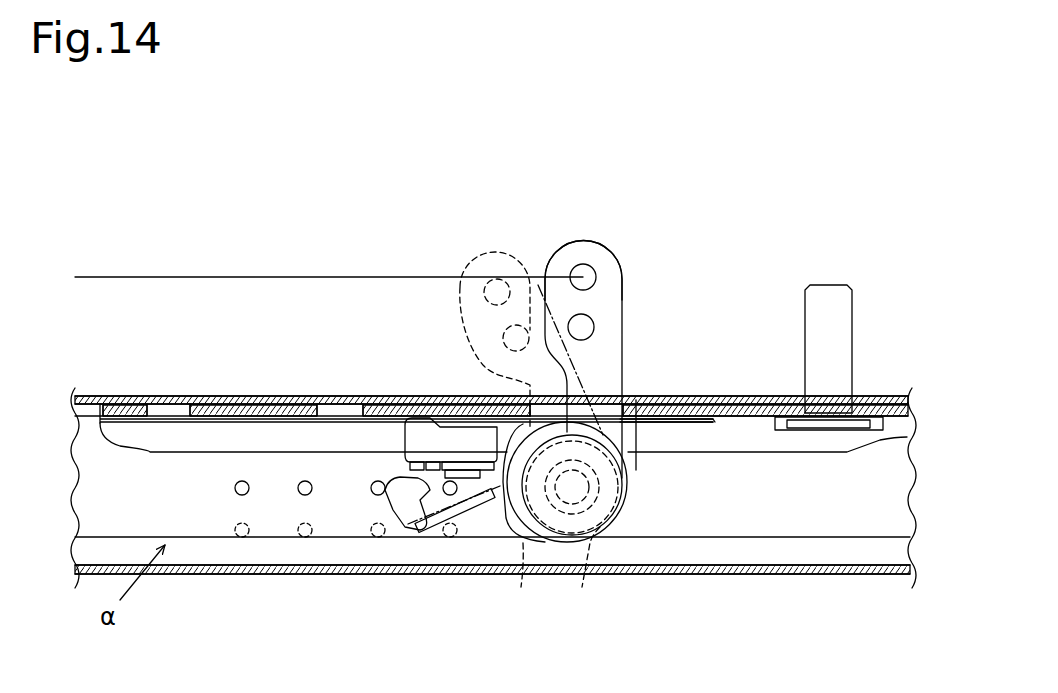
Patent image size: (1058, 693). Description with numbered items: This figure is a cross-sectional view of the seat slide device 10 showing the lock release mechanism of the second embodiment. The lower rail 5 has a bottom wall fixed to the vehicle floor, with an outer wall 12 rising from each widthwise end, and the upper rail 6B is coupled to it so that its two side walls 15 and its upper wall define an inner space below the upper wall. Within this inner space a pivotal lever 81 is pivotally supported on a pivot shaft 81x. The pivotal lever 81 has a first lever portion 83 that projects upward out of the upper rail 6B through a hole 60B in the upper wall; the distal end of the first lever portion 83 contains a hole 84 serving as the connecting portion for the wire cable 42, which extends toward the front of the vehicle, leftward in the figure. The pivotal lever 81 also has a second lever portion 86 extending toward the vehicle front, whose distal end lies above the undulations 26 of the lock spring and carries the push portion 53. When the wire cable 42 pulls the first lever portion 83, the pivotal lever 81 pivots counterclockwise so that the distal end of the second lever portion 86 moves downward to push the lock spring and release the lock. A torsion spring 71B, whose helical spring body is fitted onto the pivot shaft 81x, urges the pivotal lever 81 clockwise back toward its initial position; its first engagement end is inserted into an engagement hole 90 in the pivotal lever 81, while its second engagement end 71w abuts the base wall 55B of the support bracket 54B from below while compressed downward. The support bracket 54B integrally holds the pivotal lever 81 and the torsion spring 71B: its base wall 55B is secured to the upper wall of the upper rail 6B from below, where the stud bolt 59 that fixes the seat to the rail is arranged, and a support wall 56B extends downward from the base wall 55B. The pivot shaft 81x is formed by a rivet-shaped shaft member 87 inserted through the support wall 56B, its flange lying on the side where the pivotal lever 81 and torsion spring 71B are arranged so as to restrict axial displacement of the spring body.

The seat slide device 10 is at (172, 167).
The wire cable 42 is at (85, 276).
The side walls 15 is at (80, 396).
The upper rail 6B is at (142, 396).
The base wall 55B is at (252, 396).
The hole 60B is at (647, 397).
The torsion spring 71B is at (470, 432).
The second engagement end 71w is at (705, 417).
The support bracket 54B is at (152, 452).
The lower rail 5 is at (723, 577).
The outer wall 12 is at (857, 557).
The second lever portion 86 is at (403, 438).
The push portion 53 is at (410, 463).
The undulation 26 is at (435, 497).
The pivotal lever 81 is at (622, 283).
The first lever portion 83 is at (587, 245).
The hole 84 is at (582, 267).
The shaft member 87 is at (627, 495).
The engagement hole 90 is at (520, 582).
The pivot shaft 81x is at (582, 574).
The support wall 56B is at (630, 437).
The stud bolt 59 is at (852, 285).